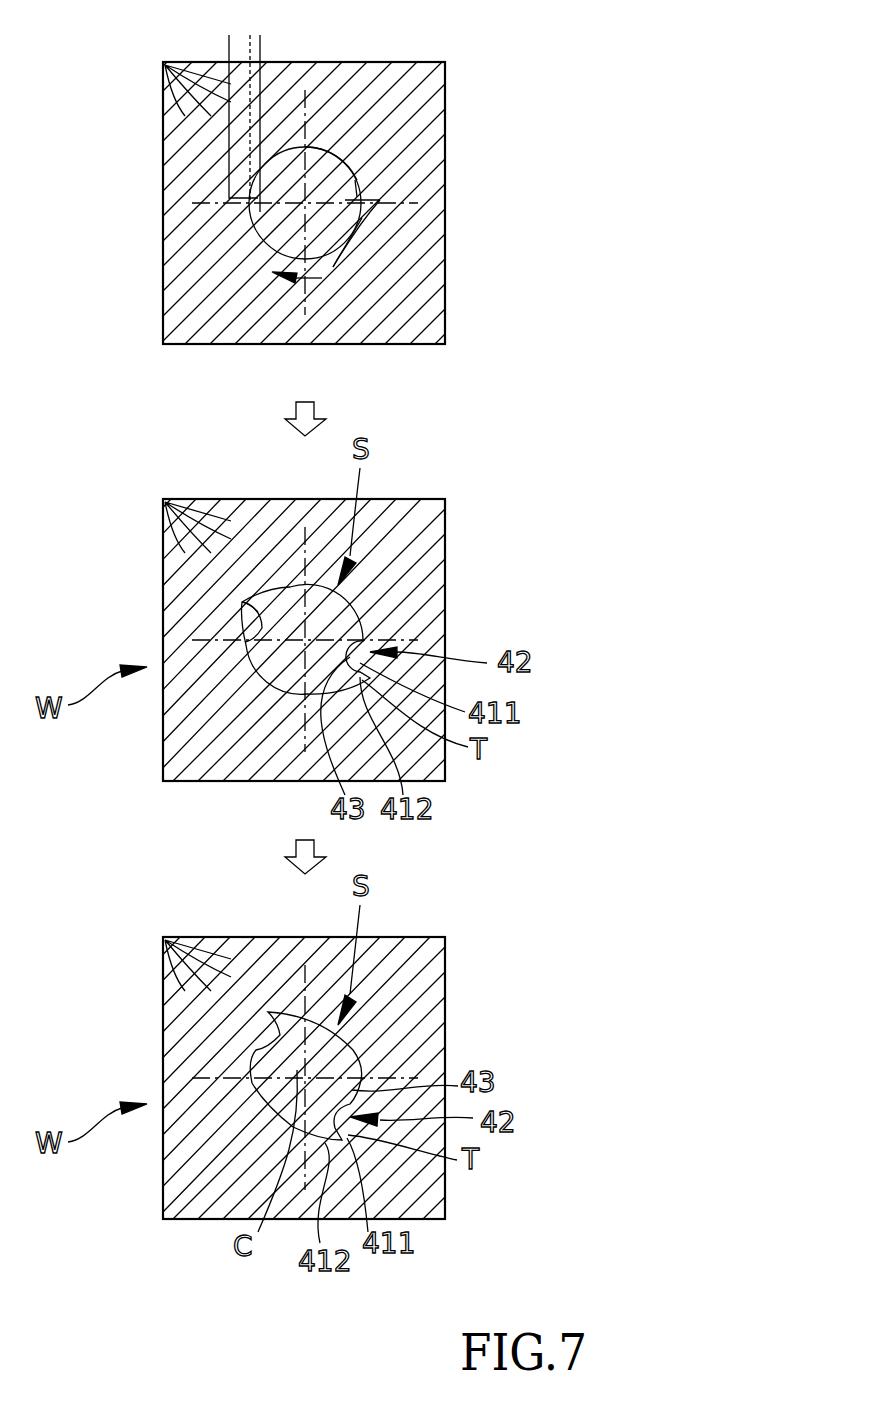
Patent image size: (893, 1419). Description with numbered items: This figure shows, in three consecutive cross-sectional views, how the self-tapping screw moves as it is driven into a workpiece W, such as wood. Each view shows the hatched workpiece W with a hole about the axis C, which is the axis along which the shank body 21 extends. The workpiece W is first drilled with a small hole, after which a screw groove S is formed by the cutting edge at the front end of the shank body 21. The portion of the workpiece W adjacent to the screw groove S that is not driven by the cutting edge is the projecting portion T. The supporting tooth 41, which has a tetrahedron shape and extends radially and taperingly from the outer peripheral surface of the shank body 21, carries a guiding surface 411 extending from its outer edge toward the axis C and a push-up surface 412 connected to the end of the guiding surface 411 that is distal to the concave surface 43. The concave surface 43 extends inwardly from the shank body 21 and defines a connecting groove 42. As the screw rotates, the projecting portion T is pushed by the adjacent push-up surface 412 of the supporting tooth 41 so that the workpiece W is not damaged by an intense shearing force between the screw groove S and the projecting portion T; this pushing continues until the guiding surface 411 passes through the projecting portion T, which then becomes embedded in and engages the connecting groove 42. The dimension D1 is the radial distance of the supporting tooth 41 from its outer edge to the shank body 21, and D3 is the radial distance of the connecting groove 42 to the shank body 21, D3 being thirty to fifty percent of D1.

The workpiece W is at (122, 234).
The shank body 21 is at (358, 175).
The screw groove S is at (350, 118).
The projecting portion T is at (365, 250).
The supporting tooth 41 is at (400, 236).
The guiding surface 411 is at (383, 191).
The push-up surface 412 is at (362, 218).
The connecting groove 42 is at (378, 160).
The concave surface 43 is at (348, 205).
The axis C is at (298, 642).
The radial distance of supporting tooth D1 is at (226, 41).
The radial distance of connecting groove D3 is at (263, 41).